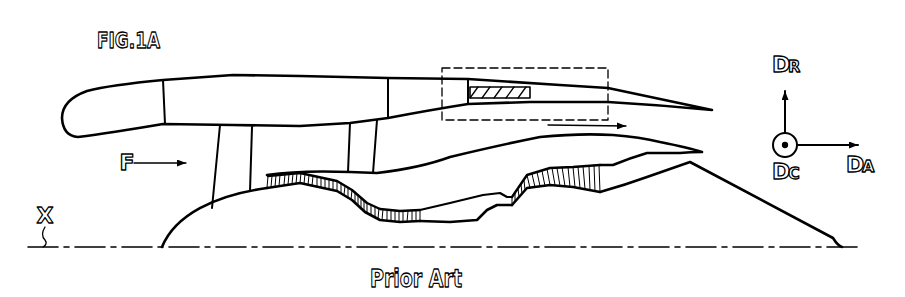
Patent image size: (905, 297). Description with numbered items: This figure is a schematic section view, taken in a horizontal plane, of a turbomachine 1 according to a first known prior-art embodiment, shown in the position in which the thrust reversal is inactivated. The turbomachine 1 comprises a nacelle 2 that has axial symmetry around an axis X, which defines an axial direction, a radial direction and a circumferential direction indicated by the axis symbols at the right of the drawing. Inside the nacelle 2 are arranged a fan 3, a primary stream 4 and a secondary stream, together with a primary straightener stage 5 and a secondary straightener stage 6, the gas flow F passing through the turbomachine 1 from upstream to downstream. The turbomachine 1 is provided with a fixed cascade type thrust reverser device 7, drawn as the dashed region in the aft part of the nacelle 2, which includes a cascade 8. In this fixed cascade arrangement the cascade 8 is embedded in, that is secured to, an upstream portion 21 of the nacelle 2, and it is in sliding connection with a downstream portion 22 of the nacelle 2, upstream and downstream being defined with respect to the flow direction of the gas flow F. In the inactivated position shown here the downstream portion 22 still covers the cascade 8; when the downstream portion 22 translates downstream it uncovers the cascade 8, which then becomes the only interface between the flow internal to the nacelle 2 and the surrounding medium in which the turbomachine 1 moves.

The turbomachine 1 is at (72, 78).
The nacelle 2 is at (307, 76).
The upstream portion of the nacelle 21 is at (237, 110).
The downstream portion of the nacelle 22 is at (675, 100).
The fan 3 is at (218, 188).
The primary stream 4 is at (674, 123).
The primary straightener stage 5 is at (437, 211).
The secondary straightener stage 6 is at (365, 143).
The cascade type thrust reverser device 7 is at (608, 68).
The cascade 8 is at (505, 87).